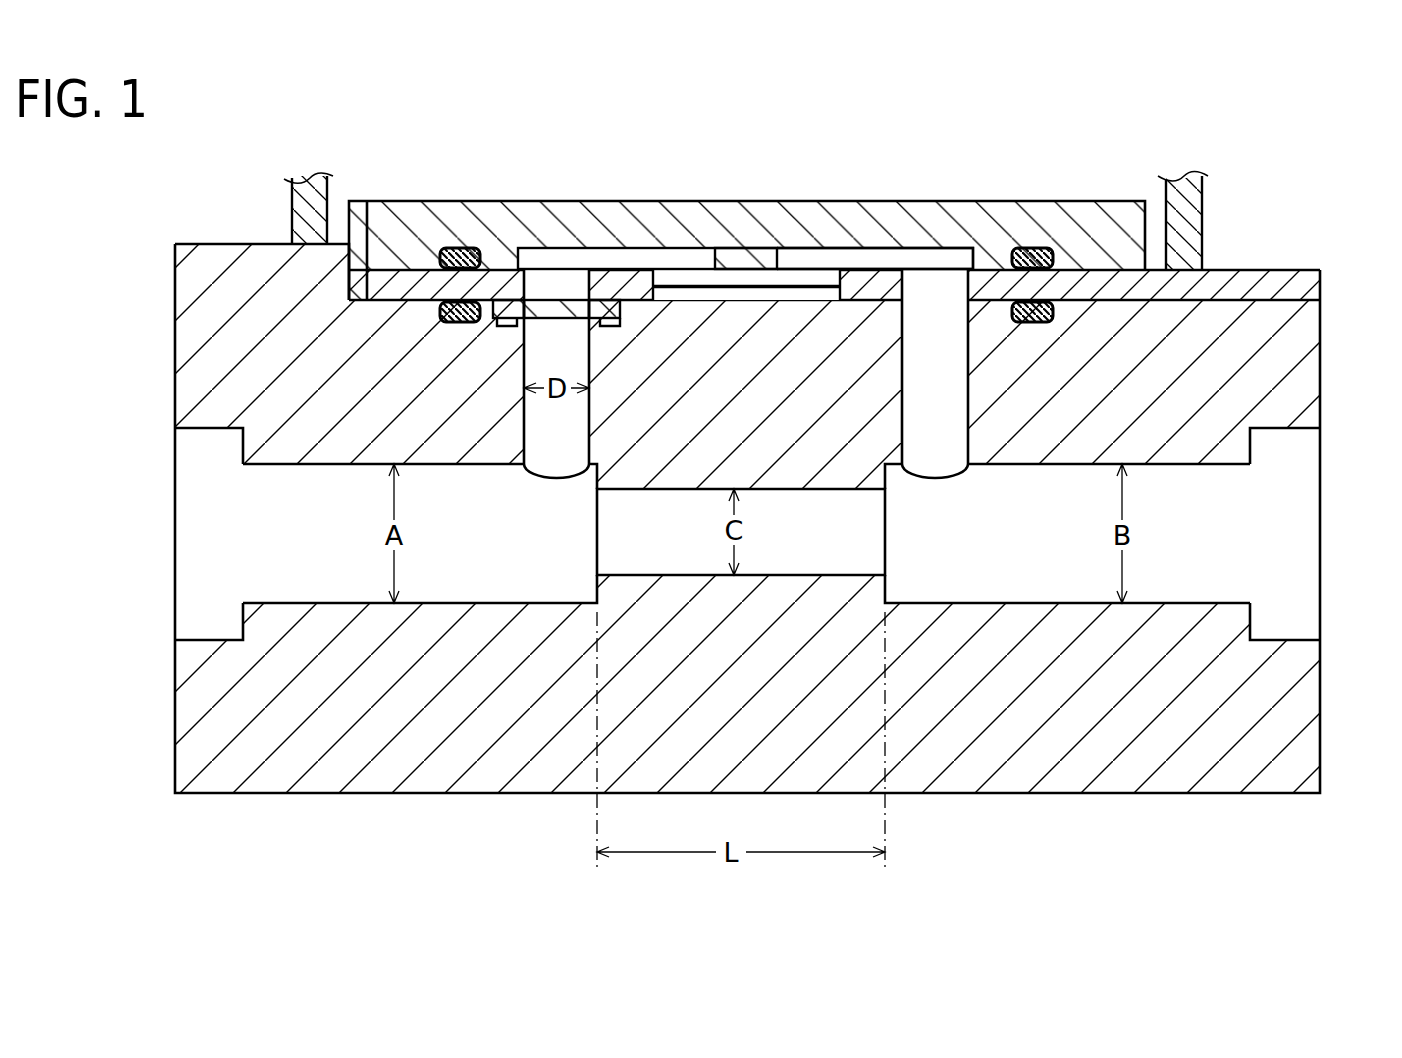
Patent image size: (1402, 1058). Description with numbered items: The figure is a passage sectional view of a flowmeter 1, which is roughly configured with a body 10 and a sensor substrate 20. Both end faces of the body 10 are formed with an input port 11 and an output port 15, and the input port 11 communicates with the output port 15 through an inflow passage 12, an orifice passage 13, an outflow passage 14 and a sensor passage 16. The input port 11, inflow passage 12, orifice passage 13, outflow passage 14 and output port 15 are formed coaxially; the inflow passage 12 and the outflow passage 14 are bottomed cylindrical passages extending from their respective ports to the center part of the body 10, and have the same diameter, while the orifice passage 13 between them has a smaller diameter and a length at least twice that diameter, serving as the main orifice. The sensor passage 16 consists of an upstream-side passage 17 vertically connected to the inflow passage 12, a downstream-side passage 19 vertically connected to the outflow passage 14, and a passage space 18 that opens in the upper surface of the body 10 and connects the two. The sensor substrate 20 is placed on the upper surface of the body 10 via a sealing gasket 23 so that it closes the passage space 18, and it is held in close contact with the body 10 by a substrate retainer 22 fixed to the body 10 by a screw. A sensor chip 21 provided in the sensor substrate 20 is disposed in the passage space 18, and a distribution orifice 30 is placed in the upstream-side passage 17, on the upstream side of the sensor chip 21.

The flowmeter 1 is at (1037, 137).
The body 10 is at (1070, 768).
The input port 11 is at (215, 620).
The inflow passage 12 is at (497, 578).
The orifice passage 13 is at (858, 558).
The outflow passage 14 is at (1188, 585).
The output port 15 is at (1292, 610).
The sensor passage 16 is at (619, 247).
The upstream-side passage 17 is at (543, 421).
The passage space 18 is at (834, 258).
The downstream-side passage 19 is at (940, 388).
The sensor substrate 20 is at (383, 282).
The sensor chip 21 is at (737, 258).
The substrate retainer 22 is at (530, 228).
The sealing gasket 23 is at (455, 252).
The distribution orifice 30 is at (522, 322).